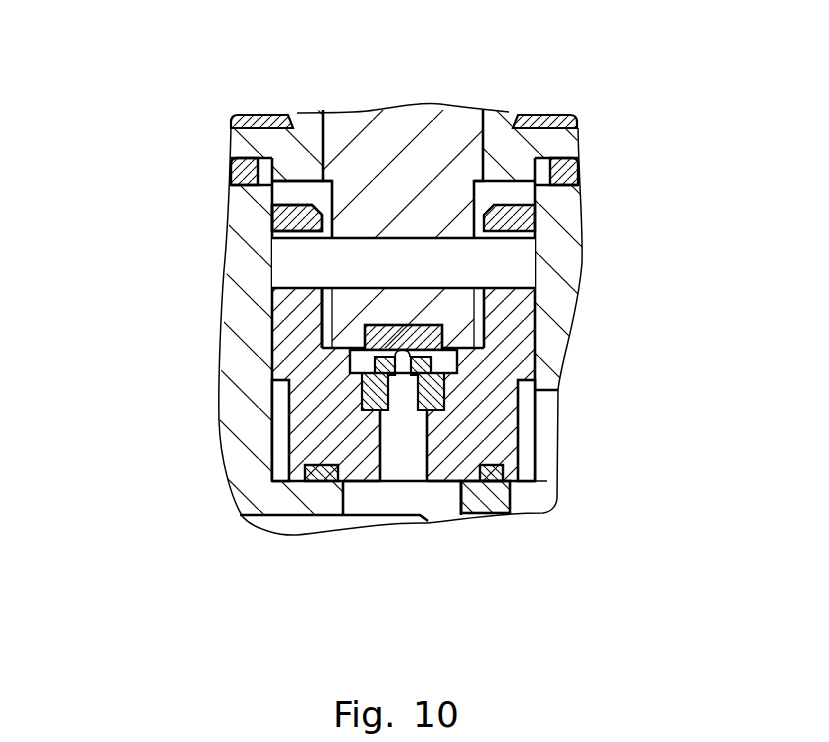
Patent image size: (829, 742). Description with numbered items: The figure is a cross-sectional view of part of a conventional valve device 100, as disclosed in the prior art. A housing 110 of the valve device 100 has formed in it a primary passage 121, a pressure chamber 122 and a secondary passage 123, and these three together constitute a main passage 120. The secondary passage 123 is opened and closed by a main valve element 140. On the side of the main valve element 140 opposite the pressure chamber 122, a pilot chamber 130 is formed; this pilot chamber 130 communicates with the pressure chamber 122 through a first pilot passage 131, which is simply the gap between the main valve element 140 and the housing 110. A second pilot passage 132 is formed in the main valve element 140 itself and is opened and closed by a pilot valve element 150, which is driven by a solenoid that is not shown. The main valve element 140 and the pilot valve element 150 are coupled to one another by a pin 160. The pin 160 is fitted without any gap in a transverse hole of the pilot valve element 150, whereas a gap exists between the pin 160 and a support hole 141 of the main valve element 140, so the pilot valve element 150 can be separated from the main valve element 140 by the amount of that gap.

The valve device 100 is at (137, 132).
The housing 110 is at (242, 365).
The main passage 120 is at (567, 464).
The primary passage 121 is at (527, 500).
The pressure chamber 122 is at (282, 445).
The secondary passage 123 is at (390, 497).
The pilot chamber 130 is at (297, 193).
The first pilot passage 131 is at (280, 340).
The second pilot passage 132 is at (410, 455).
The main valve element 140 is at (309, 410).
The support hole 141 is at (298, 238).
The pilot valve element 150 is at (417, 150).
The pin 160 is at (497, 265).